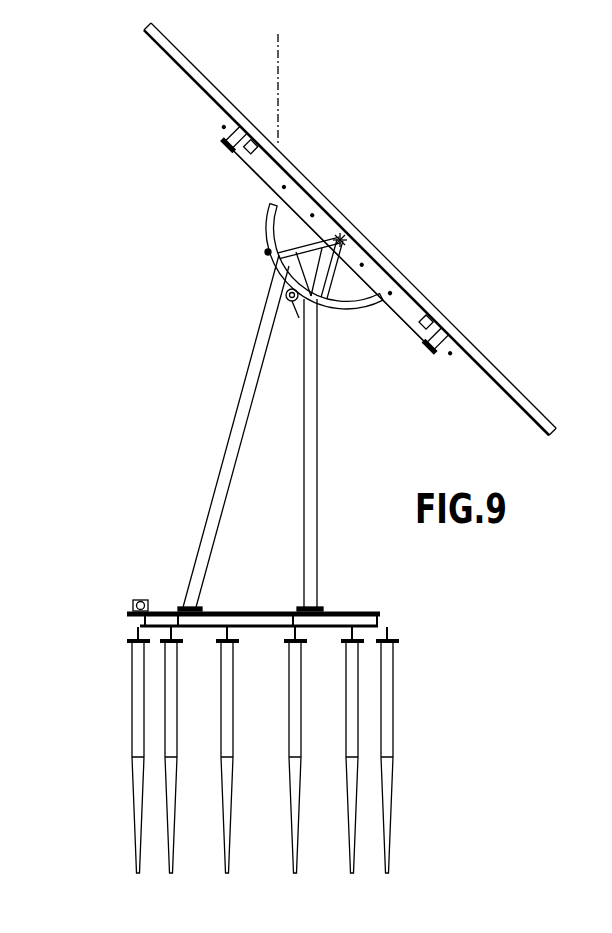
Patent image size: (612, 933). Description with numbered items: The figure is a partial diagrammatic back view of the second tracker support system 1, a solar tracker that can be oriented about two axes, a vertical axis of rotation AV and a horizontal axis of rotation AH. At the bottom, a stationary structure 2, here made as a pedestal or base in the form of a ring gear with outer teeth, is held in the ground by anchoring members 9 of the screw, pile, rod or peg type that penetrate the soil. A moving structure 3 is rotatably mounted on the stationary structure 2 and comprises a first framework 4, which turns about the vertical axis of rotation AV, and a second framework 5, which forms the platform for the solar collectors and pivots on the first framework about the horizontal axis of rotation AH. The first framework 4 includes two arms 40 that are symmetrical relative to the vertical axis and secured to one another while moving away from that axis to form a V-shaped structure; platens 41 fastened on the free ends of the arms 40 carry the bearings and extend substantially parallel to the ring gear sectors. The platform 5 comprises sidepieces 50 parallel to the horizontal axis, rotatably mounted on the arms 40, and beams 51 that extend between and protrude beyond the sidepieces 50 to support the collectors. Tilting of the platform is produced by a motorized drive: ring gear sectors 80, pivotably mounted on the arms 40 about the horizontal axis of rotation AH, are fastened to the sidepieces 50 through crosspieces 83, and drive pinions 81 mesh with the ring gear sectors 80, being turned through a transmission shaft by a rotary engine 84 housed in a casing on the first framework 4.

The tracker support system 1 is at (166, 298).
The stationary structure 2 is at (117, 626).
The moving structure 3 is at (440, 165).
The first framework 4 is at (167, 422).
The second framework 5 is at (508, 395).
The anchoring members 9 is at (175, 700).
The arms 40 is at (303, 470).
The platens 41 is at (266, 253).
The sidepieces 50 is at (222, 140).
The beams 51 is at (175, 44).
The ring gear sectors 80 is at (342, 310).
The drive pinions 81 is at (296, 305).
The crosspieces 83 is at (256, 172).
The rotary engine 84 is at (286, 295).
The horizontal axis of rotation AH is at (343, 238).
The vertical axis of rotation AV is at (275, 60).